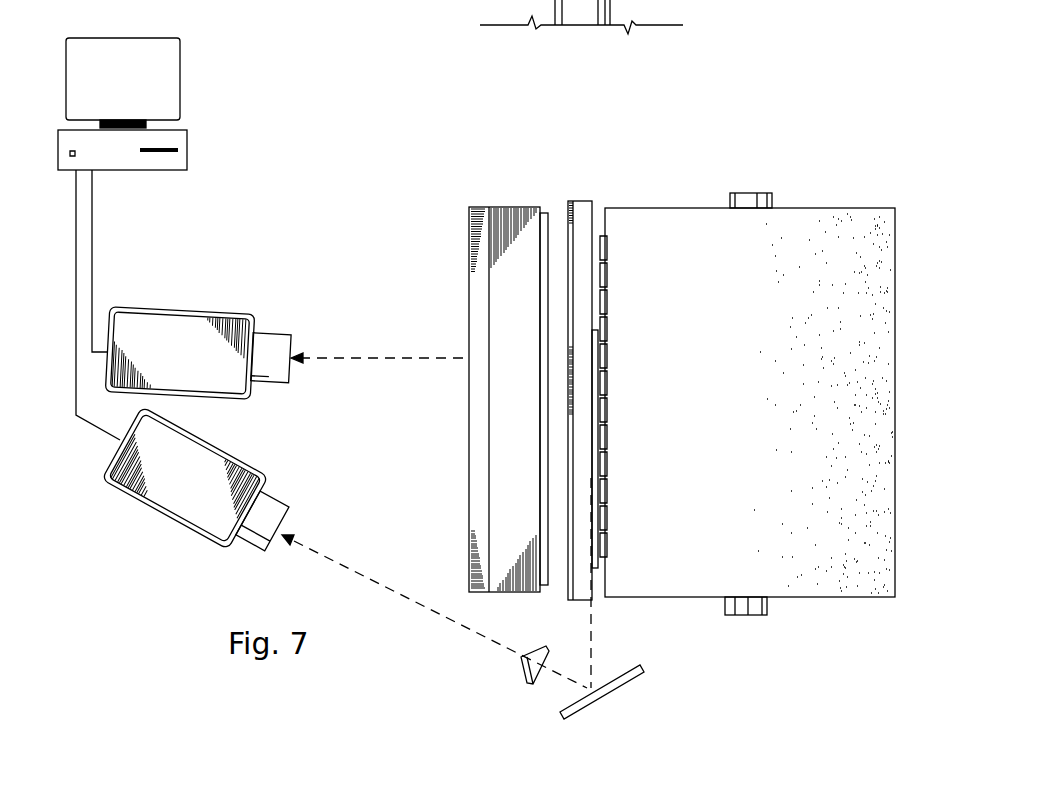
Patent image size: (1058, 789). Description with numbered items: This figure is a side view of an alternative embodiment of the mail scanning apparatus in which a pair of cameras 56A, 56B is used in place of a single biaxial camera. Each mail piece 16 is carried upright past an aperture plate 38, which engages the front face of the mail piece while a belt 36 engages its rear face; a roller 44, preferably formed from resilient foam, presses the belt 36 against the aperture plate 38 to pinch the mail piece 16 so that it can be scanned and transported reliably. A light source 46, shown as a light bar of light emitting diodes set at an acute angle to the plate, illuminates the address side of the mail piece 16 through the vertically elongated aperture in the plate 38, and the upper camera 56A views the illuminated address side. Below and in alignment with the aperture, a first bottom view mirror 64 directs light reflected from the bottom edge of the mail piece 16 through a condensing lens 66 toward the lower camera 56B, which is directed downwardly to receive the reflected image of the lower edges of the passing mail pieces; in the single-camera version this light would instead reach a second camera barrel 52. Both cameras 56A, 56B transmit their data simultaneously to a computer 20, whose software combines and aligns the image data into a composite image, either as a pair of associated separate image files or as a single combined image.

The mail piece 16 is at (592, 427).
The computer 20 is at (187, 152).
The belt 36 is at (602, 555).
The aperture plate 38 is at (583, 212).
The roller 44 is at (808, 228).
The light source 46 is at (527, 228).
The second camera barrel 52 is at (581, 17).
The camera 56A is at (178, 325).
The lower camera 56B is at (162, 496).
The first bottom view mirror 64 is at (623, 686).
The condensing lens 66 is at (528, 671).